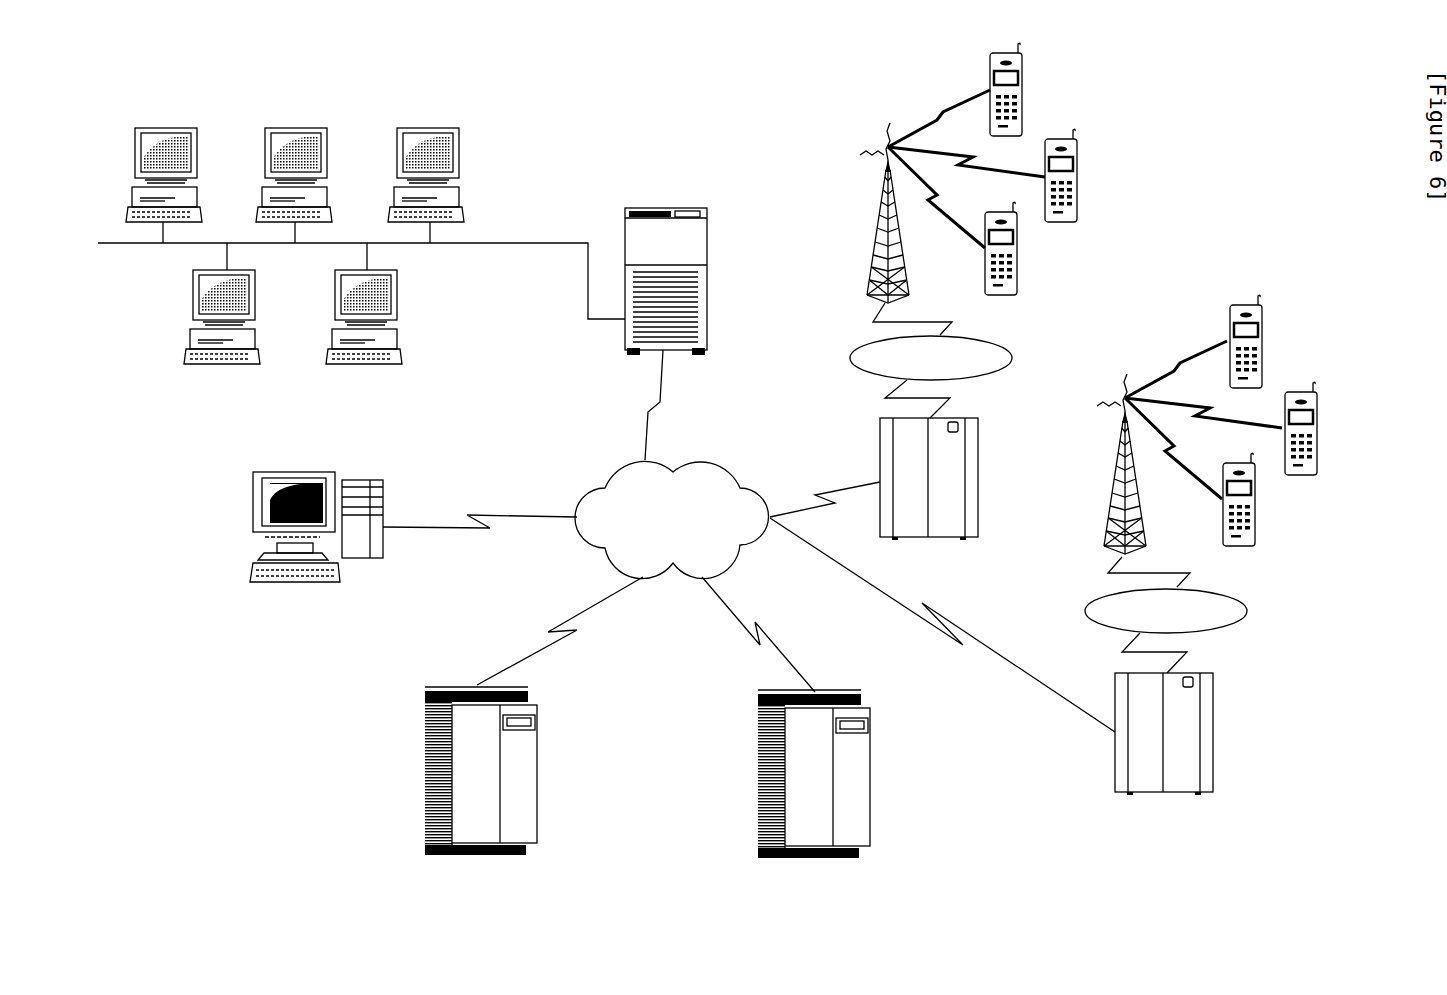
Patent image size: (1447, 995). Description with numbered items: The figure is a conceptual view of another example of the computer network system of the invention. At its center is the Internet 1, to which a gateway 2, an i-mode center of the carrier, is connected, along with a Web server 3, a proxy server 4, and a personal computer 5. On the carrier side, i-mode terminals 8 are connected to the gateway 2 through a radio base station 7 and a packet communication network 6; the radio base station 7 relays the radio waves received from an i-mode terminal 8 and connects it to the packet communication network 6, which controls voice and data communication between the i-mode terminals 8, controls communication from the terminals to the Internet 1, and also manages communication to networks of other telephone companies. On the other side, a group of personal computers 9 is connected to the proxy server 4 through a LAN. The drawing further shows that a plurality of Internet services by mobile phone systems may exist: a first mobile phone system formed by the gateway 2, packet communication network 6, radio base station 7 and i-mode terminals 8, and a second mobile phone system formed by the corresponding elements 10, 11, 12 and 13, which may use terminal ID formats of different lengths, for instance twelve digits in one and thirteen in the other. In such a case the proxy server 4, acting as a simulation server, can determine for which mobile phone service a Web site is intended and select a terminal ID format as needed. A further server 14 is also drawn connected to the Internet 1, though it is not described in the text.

The Internet 1 is at (698, 483).
The gateway 2 is at (978, 478).
The Web server 3 is at (538, 778).
The proxy server 4 is at (698, 218).
The personal computer 5 is at (370, 497).
The packet communication network 6 is at (1012, 362).
The radio base station 7 is at (877, 207).
The i-mode terminals 8 is at (1022, 95).
The personal computers 9 is at (196, 152).
The gateway of second mobile phone system 10 is at (1217, 732).
The packet communication network of second mobile phone system 11 is at (1245, 612).
The radio base station of second mobile phone system 12 is at (1113, 457).
The terminals of second mobile phone system 13 is at (1262, 342).
The server 14 is at (870, 785).